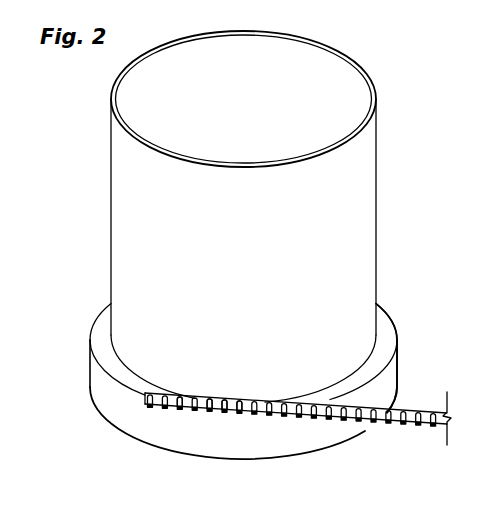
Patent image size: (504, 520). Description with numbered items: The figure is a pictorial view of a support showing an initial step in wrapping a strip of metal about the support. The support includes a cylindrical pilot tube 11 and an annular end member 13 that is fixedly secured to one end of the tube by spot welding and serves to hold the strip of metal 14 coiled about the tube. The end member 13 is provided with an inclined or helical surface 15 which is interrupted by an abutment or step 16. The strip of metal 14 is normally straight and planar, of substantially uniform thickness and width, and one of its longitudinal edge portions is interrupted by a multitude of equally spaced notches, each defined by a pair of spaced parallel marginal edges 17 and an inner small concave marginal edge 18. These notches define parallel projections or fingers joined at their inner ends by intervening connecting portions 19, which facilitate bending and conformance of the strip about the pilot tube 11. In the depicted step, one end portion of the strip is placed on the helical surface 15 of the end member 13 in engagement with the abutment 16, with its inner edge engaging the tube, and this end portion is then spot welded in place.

The cylindrical pilot tube 11 is at (118, 185).
The annular end member 13 is at (102, 408).
The strip of metal 14 is at (404, 426).
The helical surface 15 is at (380, 317).
The abutment 16 is at (148, 395).
The parallel marginal edges 17 is at (232, 412).
The concave marginal edge 18 is at (226, 408).
The connecting portions 19 is at (188, 378).